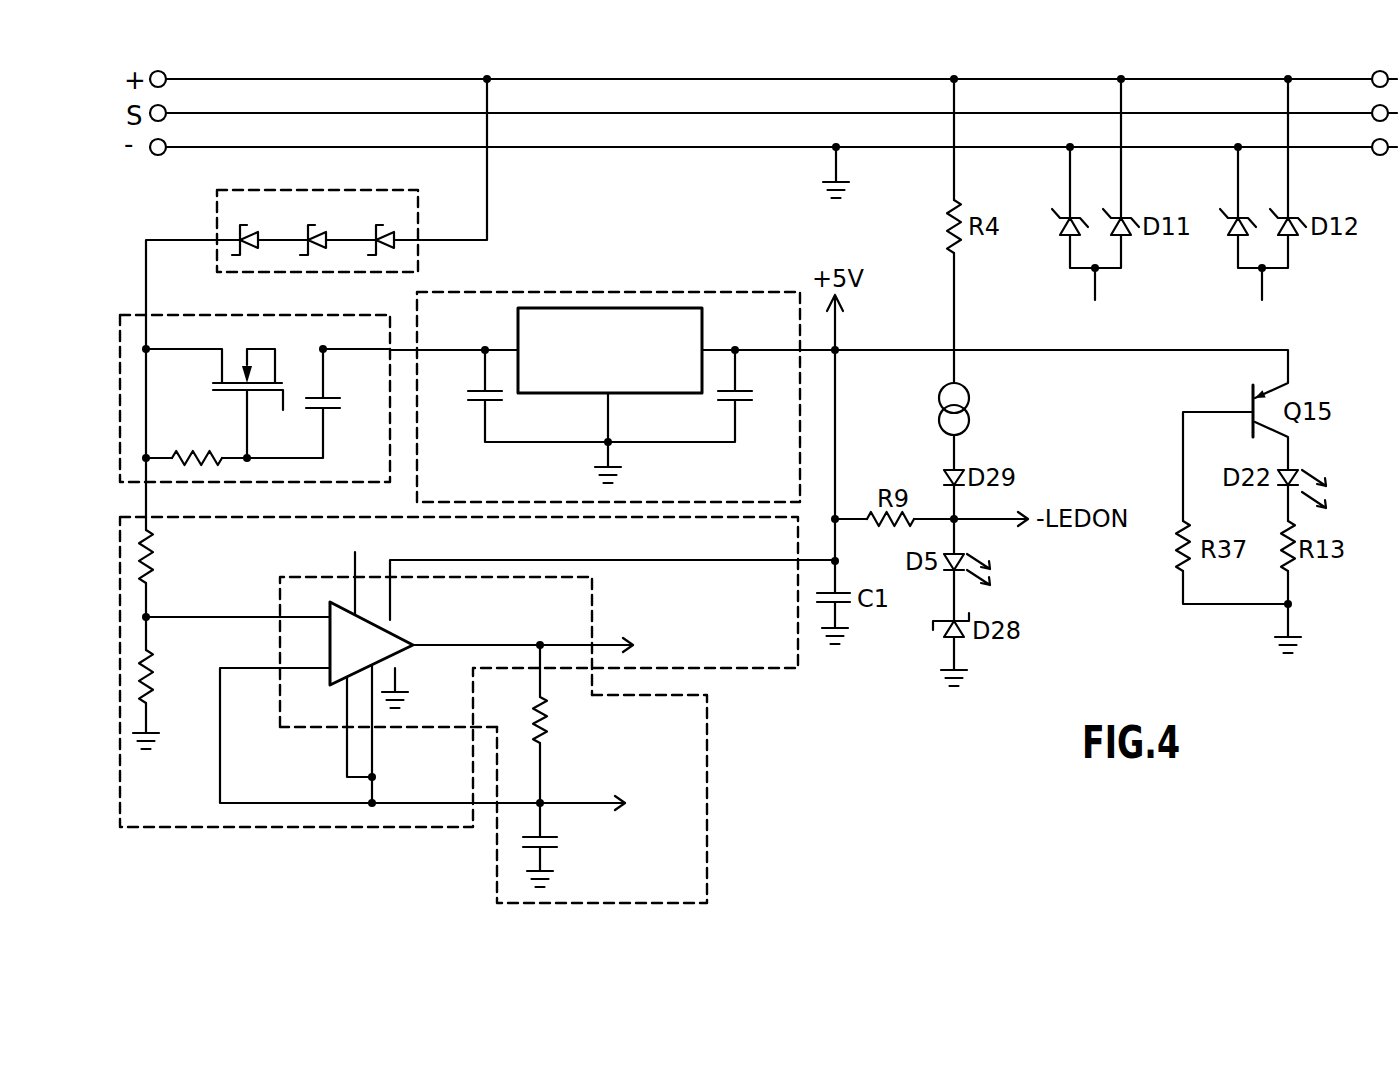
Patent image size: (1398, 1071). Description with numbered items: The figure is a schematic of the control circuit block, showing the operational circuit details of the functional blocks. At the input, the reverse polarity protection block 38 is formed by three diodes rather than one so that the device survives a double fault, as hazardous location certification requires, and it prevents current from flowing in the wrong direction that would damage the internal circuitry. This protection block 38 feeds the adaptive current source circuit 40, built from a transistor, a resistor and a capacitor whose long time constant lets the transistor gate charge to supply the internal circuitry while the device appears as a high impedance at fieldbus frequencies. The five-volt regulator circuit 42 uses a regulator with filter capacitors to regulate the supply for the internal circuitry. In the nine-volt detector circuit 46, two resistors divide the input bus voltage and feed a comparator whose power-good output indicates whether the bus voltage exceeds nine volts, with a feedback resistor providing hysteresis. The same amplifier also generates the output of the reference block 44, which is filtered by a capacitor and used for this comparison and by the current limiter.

The reverse polarity protection block 38 is at (217, 206).
The adaptive current source circuit 40 is at (185, 313).
The 5.0-volt regulator circuit 42 is at (755, 292).
The 0.2-volt reference block 44 is at (707, 845).
The 9.0-volt detector circuit 46 is at (765, 668).